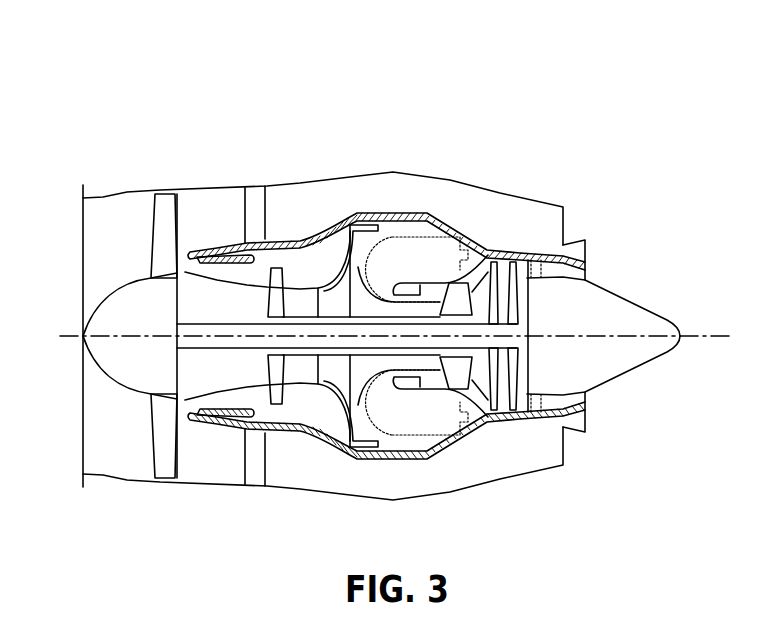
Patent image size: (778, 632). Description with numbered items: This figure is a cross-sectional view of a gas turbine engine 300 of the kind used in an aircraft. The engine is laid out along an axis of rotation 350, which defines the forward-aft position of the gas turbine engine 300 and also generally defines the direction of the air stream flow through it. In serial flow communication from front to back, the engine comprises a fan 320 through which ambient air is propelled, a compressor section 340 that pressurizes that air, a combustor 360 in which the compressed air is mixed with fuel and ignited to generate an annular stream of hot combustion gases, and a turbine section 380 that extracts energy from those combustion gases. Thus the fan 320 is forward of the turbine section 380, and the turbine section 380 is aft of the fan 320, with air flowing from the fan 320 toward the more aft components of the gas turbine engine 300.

The gas turbine engine 300 is at (72, 79).
The fan 320 is at (162, 438).
The compressor section 340 is at (305, 280).
The axis of rotation 350 is at (712, 336).
The combustor 360 is at (423, 250).
The turbine section 380 is at (485, 398).